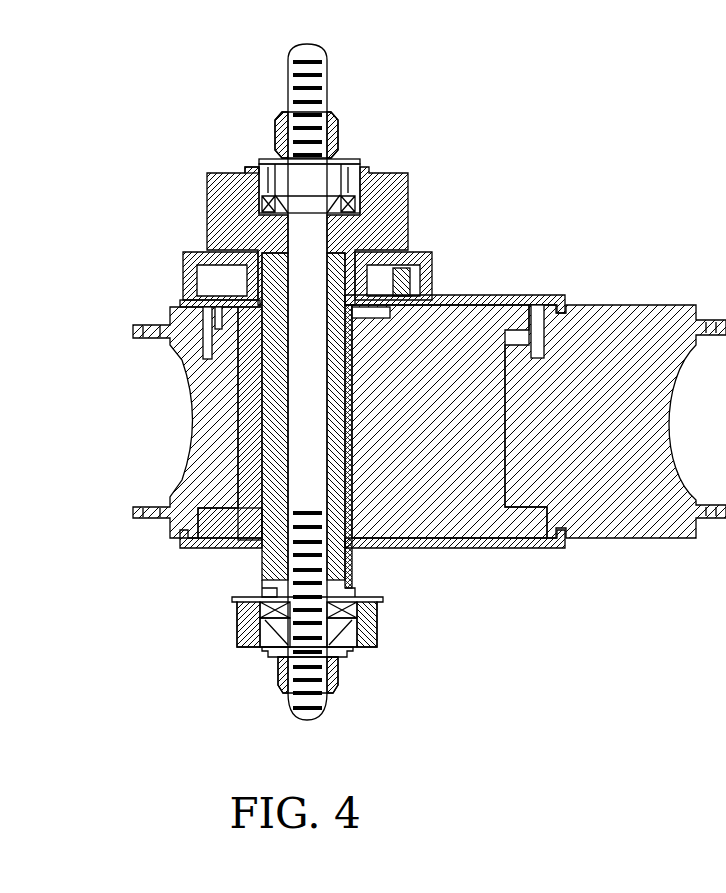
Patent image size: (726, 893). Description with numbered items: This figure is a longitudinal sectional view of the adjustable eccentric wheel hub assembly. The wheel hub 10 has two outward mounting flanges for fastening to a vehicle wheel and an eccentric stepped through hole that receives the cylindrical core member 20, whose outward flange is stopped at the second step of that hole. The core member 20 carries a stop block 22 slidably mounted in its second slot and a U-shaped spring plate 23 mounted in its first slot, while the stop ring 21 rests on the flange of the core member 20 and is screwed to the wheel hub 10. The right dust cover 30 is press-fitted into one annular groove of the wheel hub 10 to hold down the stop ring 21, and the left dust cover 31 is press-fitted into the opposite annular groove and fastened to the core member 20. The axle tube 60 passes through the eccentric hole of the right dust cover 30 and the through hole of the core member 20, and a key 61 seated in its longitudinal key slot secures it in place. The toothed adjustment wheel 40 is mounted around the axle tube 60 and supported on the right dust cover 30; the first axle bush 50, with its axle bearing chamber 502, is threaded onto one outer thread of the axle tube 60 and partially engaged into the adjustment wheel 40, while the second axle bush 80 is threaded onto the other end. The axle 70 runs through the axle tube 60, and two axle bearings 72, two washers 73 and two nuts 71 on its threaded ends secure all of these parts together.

The wheel hub 10 is at (617, 303).
The core member 20 is at (238, 372).
The stop ring 21 is at (182, 301).
The stop block 22 is at (545, 297).
The spring plate 23 is at (427, 252).
The right dust cover 30 is at (485, 298).
The left dust cover 31 is at (565, 547).
The adjustment wheel 40 is at (190, 255).
The first axle bush 50 is at (408, 176).
The axle bearing chamber 502 is at (250, 167).
The axle tube 60 is at (228, 546).
The key 61 is at (354, 541).
The axle 70 is at (327, 67).
The nuts 71 is at (283, 118).
The axle bearings 72 is at (258, 197).
The washers 73 is at (337, 159).
The second axle bush 80 is at (247, 613).